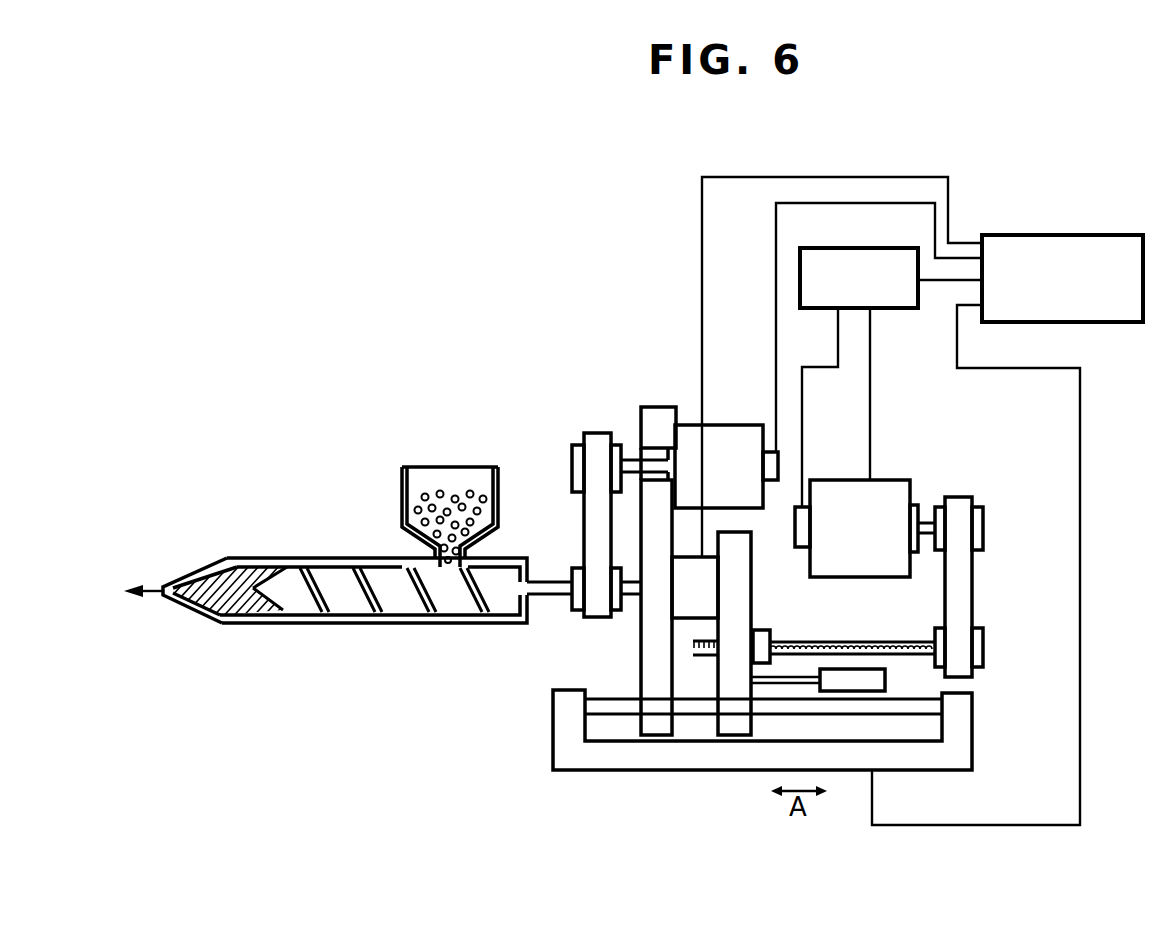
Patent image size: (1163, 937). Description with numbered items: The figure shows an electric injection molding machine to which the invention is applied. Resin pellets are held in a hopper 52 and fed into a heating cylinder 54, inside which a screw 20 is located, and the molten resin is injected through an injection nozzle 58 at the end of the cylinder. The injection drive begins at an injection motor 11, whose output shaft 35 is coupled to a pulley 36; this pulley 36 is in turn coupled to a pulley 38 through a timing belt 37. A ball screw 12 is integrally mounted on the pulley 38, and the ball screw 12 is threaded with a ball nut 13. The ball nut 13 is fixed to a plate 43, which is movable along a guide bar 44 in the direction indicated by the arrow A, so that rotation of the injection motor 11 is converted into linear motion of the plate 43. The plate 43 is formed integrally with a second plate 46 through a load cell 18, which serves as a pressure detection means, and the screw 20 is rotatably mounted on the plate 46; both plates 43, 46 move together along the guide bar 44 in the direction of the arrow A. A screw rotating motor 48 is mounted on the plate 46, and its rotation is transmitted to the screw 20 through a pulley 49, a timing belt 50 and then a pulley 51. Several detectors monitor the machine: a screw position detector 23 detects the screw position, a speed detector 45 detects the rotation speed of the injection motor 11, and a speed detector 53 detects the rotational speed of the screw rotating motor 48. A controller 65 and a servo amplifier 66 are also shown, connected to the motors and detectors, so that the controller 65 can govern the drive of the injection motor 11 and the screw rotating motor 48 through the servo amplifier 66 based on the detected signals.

The injection motor 11 is at (913, 492).
The ball screw 12 is at (882, 641).
The ball nut 13 is at (772, 636).
The load cell 18 is at (692, 606).
The screw 20 is at (349, 602).
The screw position detector 23 is at (870, 682).
The output shaft 35 is at (936, 525).
The pulley 36 is at (986, 518).
The timing belt 37 is at (960, 606).
The pulley 38 is at (986, 646).
The plate 43 is at (737, 726).
The guide bar 44 is at (928, 710).
The speed detector 45 is at (800, 533).
The plate 46 is at (639, 632).
The screw rotating motor 48 is at (737, 440).
The pulley 49 is at (578, 450).
The timing belt 50 is at (600, 445).
The pulley 51 is at (572, 608).
The hopper 52 is at (445, 466).
The speed detector 53 is at (783, 466).
The heating cylinder 54 is at (247, 557).
The injection nozzle 58 is at (165, 598).
The controller 65 is at (1038, 235).
The servo amplifier 66 is at (873, 248).